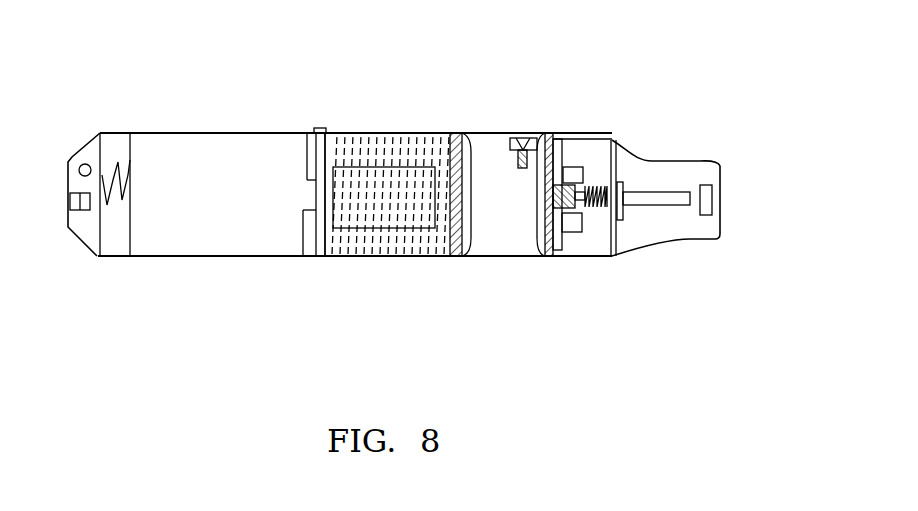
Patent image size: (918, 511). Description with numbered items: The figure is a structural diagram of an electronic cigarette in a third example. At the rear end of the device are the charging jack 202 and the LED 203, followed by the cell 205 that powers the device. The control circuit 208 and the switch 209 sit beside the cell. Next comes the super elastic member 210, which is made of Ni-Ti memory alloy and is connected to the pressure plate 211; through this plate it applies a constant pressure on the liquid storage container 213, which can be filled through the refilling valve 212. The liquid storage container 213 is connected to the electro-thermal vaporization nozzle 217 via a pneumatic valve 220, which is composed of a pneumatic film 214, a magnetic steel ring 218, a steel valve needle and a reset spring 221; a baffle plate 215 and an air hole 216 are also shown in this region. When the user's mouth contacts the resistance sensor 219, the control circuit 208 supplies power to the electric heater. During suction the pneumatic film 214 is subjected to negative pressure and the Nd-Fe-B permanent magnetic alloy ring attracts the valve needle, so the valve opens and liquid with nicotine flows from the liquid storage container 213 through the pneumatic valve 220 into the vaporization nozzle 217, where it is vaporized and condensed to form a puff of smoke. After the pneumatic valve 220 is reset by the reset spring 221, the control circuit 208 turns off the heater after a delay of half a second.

The charging jack 202 is at (72, 228).
The LED 203 is at (82, 162).
The cell 205 is at (185, 225).
The control circuit 208 is at (388, 196).
The switch 209 is at (317, 118).
The super elastic member 210 is at (385, 250).
The pressure plate 211 is at (440, 250).
The refilling valve 212 is at (528, 136).
The liquid storage container 213 is at (505, 250).
The pneumatic film 214 is at (555, 250).
The baffle plate 215 is at (550, 135).
The air hole 216 is at (562, 127).
The electro-thermal vaporization nozzle 217 is at (641, 205).
The magnetic steel ring 218 is at (577, 232).
The resistance sensor 219 is at (708, 215).
The pneumatic valve 220 is at (610, 140).
The reset spring 221 is at (657, 145).